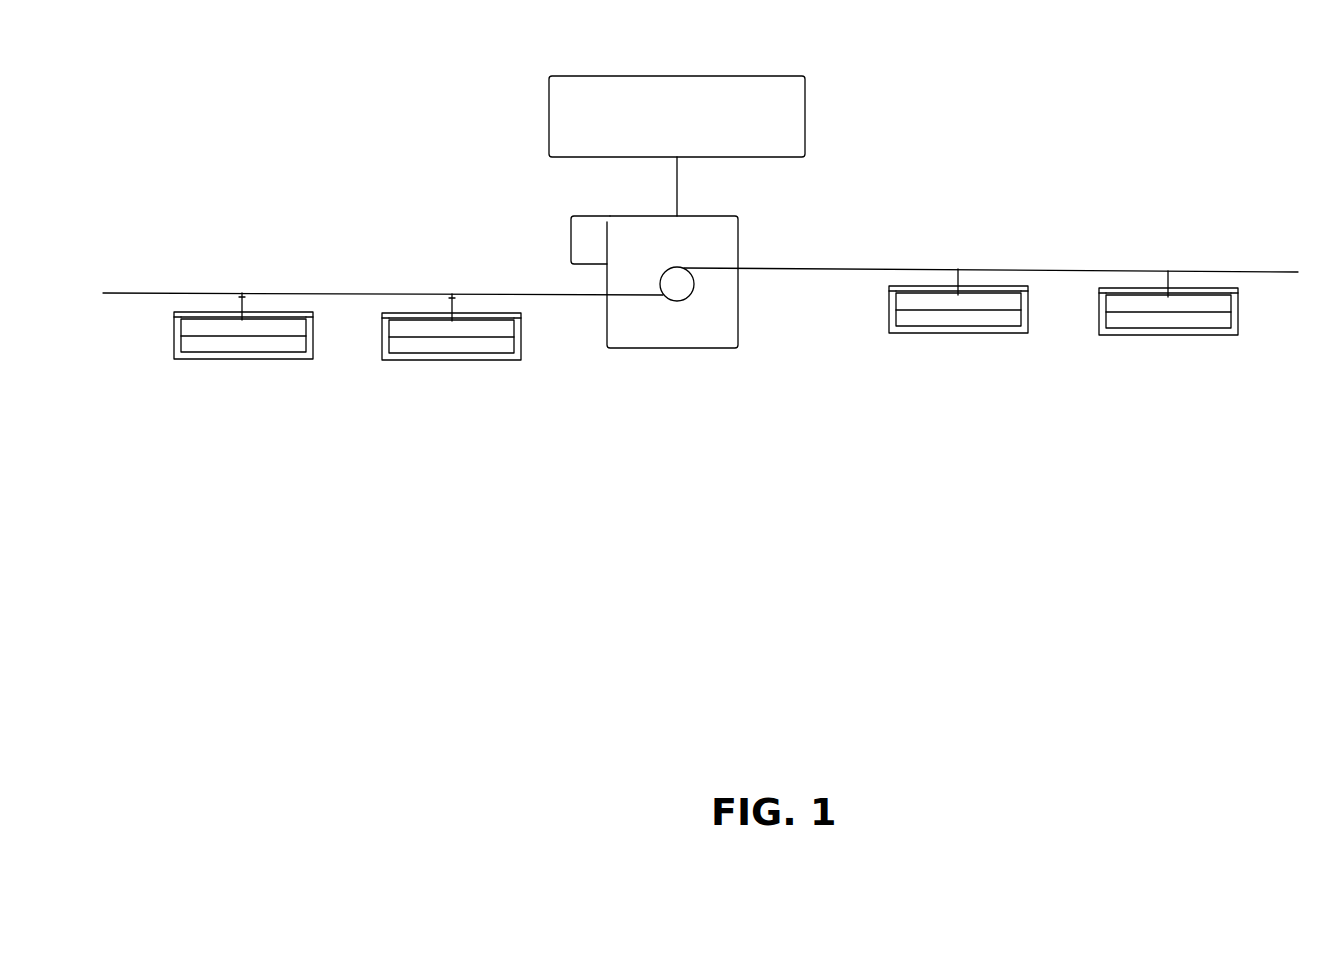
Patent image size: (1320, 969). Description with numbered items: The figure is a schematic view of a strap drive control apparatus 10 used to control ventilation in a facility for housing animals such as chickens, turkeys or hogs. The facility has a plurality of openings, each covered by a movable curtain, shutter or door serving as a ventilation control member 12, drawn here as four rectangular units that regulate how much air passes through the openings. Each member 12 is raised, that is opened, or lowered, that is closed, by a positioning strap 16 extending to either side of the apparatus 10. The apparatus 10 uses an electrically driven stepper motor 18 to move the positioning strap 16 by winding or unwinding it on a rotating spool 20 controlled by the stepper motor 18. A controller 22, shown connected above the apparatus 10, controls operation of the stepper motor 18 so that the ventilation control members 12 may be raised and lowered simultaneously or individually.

The strap drive control apparatus 10 is at (692, 350).
The ventilation control member 12 is at (1177, 337).
The positioning strap 16 is at (342, 293).
The stepper motor 18 is at (571, 227).
The rotating spool 20 is at (694, 284).
The controller 22 is at (805, 113).